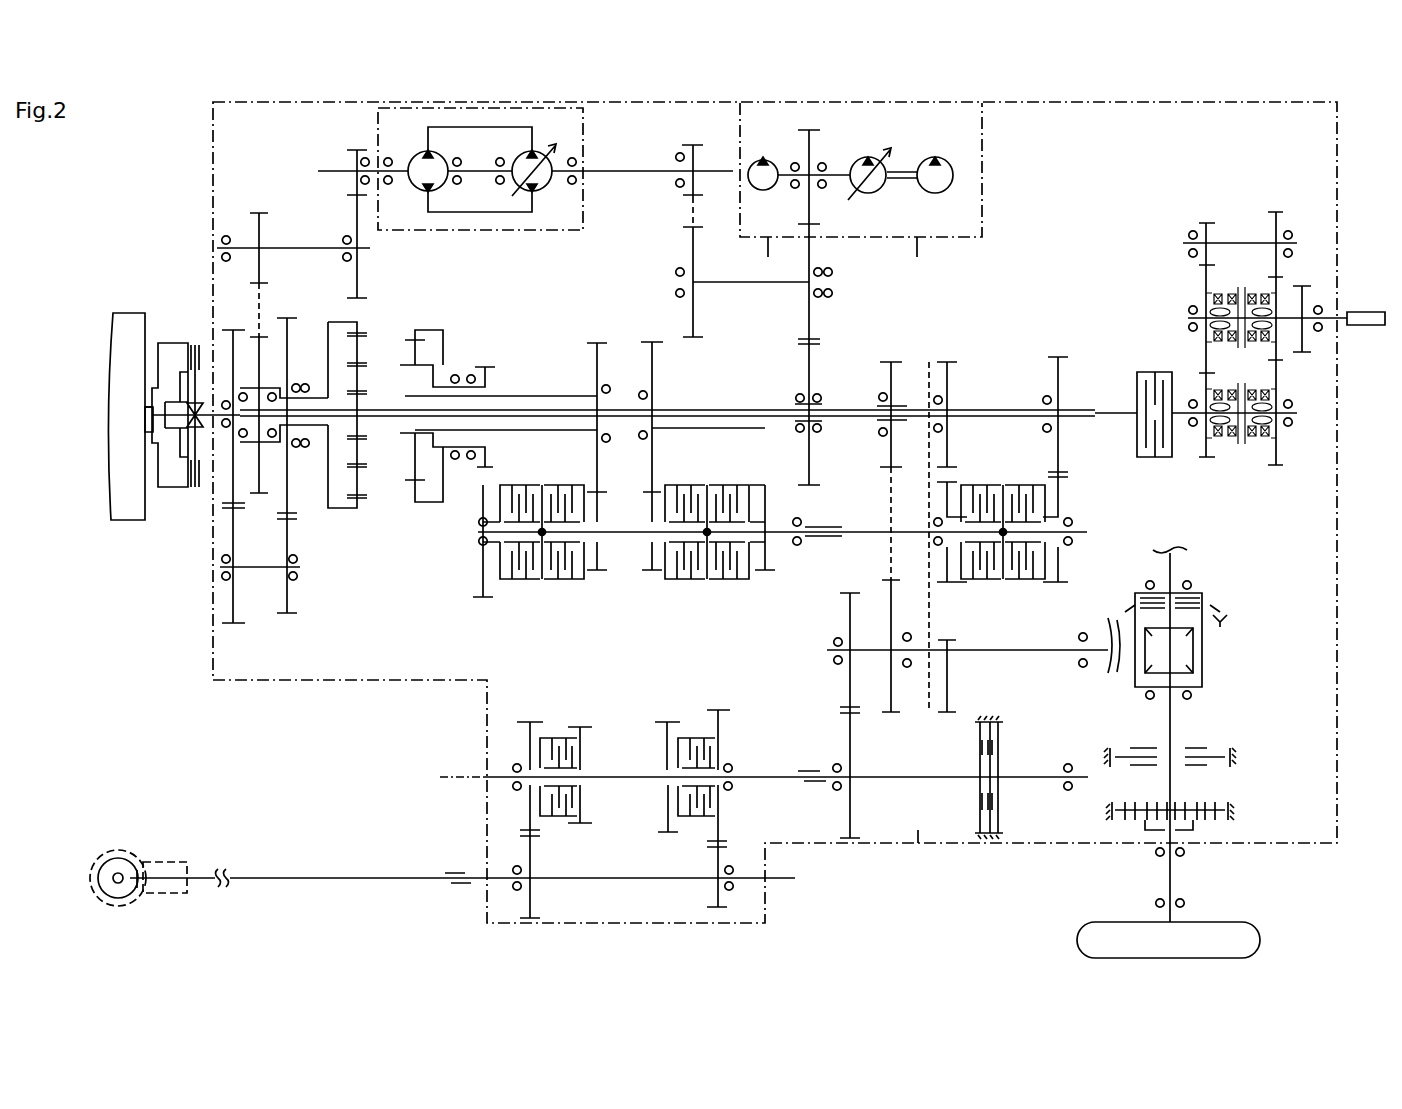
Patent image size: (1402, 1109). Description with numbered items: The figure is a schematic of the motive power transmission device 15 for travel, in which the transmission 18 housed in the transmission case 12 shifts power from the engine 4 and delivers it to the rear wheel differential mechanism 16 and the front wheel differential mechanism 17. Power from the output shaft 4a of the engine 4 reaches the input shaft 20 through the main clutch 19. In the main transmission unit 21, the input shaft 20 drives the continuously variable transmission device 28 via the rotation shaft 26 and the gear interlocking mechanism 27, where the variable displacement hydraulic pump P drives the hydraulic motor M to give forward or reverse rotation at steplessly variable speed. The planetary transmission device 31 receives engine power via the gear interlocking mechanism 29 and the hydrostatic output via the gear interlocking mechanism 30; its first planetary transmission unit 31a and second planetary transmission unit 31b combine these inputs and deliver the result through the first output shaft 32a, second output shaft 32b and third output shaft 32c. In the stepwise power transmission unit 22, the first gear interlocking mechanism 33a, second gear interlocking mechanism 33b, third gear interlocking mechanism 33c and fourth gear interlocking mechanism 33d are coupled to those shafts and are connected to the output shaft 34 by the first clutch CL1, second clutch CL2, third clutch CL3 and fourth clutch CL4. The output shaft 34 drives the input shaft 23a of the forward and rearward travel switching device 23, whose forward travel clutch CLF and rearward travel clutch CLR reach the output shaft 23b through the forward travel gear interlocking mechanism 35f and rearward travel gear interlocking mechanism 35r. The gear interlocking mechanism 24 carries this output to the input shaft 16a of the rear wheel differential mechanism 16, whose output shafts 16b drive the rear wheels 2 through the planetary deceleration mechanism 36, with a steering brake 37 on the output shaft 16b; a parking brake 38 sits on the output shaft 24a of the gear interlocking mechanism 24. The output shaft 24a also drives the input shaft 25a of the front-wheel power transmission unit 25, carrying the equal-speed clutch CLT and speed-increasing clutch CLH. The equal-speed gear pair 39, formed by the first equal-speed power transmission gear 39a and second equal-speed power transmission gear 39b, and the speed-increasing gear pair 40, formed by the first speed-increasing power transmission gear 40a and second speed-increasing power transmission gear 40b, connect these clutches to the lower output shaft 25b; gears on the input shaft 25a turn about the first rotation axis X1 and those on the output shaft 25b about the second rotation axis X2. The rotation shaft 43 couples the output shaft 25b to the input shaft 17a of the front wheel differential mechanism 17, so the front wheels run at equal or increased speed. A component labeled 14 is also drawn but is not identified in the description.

The rear wheel 2 is at (1252, 940).
The engine 4 is at (133, 520).
The output shaft 4a is at (150, 415).
The transmission case 12 is at (210, 120).
The PTO shaft 14 is at (1365, 312).
The motive power transmission device 15 is at (170, 215).
The rear wheel differential mechanism 16 is at (1245, 640).
The input shaft 16a is at (1040, 650).
The output shaft 16b is at (1172, 560).
The front wheel differential mechanism 17 is at (130, 852).
The input shaft 17a is at (165, 870).
The transmission 18 is at (400, 657).
The main clutch 19 is at (165, 345).
The input shaft 20 is at (215, 405).
The main transmission unit 21 is at (375, 587).
The stepwise power transmission unit 22 is at (645, 630).
The forward and rearward travel switching device 23 is at (1025, 332).
The input shaft 23a is at (848, 528).
The output shaft 23b is at (905, 405).
The gear interlocking mechanism 24 is at (855, 380).
The output shaft 24a is at (935, 777).
The front-wheel power transmission unit 25 is at (618, 720).
The input shaft 25a is at (750, 770).
The output shaft 25b is at (650, 885).
The rotation shaft 26 is at (708, 412).
The gear interlocking mechanism 27 is at (748, 278).
The continuously variable transmission device 28 is at (598, 130).
The gear interlocking mechanism 29 is at (228, 596).
The gear interlocking mechanism 30 is at (275, 192).
The planetary transmission device 31 is at (430, 310).
The first planetary transmission unit 31a is at (340, 530).
The second planetary transmission unit 31b is at (430, 507).
The first output shaft 32a is at (462, 385).
The second output shaft 32b is at (563, 393).
The third output shaft 32c is at (733, 428).
The first gear interlocking mechanism 33a is at (483, 597).
The second gear interlocking mechanism 33b is at (768, 567).
The third gear interlocking mechanism 33c is at (603, 355).
The fourth gear interlocking mechanism 33d is at (653, 553).
The output shaft 34 is at (795, 545).
The forward travel gear interlocking mechanism 35f is at (1062, 490).
The rearward travel gear interlocking mechanism 35r is at (953, 375).
The planetary deceleration mechanism 36 is at (1230, 812).
The steering brake 37 is at (1230, 750).
The parking brake 38 is at (1000, 792).
The equal-speed gear pair 39 is at (505, 825).
The first equal-speed power transmission gear 39a is at (530, 745).
The second equal-speed power transmission gear 39b is at (515, 905).
The speed-increasing gear pair 40 is at (745, 832).
The first speed-increasing power transmission gear 40a is at (725, 790).
The second speed-increasing power transmission gear 40b is at (705, 892).
The rotation shaft 43 is at (295, 878).
The hydraulic motor M is at (418, 158).
The variable displacement hydraulic pump P is at (545, 185).
The first clutch CL1 is at (518, 577).
The second clutch CL2 is at (740, 577).
The third clutch CL3 is at (566, 577).
The fourth clutch CL4 is at (690, 577).
The speed-increasing clutch CLH is at (690, 745).
The equal-speed clutch CLT is at (565, 817).
The forward travel clutch CLF is at (1030, 580).
The rearward travel clutch CLR is at (1003, 485).
The first rotation axis X1 is at (744, 778).
The second rotation axis X2 is at (490, 880).